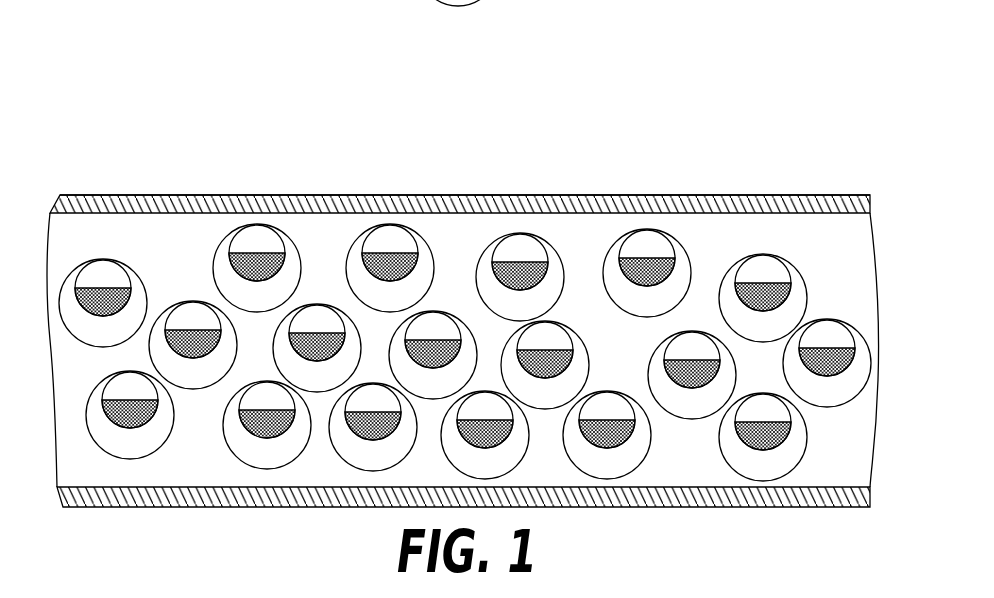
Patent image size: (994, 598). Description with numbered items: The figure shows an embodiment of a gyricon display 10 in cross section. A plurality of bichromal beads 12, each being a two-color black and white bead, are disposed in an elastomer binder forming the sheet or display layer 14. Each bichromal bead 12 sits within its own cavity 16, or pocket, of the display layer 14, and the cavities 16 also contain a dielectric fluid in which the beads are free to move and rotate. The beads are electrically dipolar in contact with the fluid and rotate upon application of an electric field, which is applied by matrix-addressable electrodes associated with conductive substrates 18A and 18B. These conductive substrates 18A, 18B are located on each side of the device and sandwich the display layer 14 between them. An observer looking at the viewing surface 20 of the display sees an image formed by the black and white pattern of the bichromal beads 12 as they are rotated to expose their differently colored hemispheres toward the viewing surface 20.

The gyricon display 10 is at (274, 66).
The bichromal beads 12 is at (517, 243).
The display layer 14 is at (845, 275).
The cavity 16 is at (218, 260).
The conductive substrate 18A is at (862, 204).
The conductive substrate 18B is at (868, 495).
The viewing surface 20 is at (343, 189).